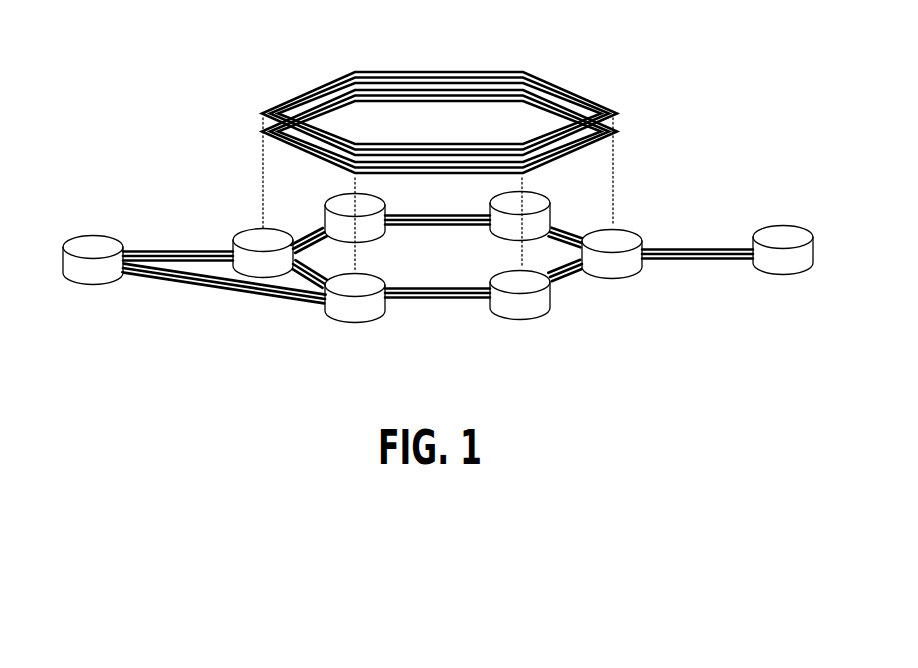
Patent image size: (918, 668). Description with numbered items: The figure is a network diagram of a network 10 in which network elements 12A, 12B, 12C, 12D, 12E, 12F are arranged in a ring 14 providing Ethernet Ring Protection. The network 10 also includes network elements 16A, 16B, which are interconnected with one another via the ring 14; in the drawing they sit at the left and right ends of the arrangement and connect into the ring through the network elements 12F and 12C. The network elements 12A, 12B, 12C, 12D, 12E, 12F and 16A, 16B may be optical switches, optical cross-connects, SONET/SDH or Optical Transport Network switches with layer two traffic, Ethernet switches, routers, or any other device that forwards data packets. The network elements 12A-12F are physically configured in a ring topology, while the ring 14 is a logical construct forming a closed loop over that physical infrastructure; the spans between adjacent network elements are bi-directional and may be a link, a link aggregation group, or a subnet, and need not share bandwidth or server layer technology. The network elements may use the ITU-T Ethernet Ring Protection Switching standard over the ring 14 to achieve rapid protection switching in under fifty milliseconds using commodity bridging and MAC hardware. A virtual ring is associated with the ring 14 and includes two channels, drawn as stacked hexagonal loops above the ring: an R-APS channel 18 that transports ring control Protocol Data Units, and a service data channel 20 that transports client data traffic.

The network 10 is at (716, 50).
The network element 12A is at (325, 203).
The network element 12B is at (556, 198).
The network element 12C is at (645, 232).
The network element 12D is at (517, 320).
The network element 12E is at (350, 322).
The network element 12F is at (256, 228).
The ring 14 is at (445, 268).
The network element 16A is at (96, 282).
The network element 16B is at (773, 273).
The R-APS channel 18 is at (484, 90).
The service data channel 20 is at (458, 70).